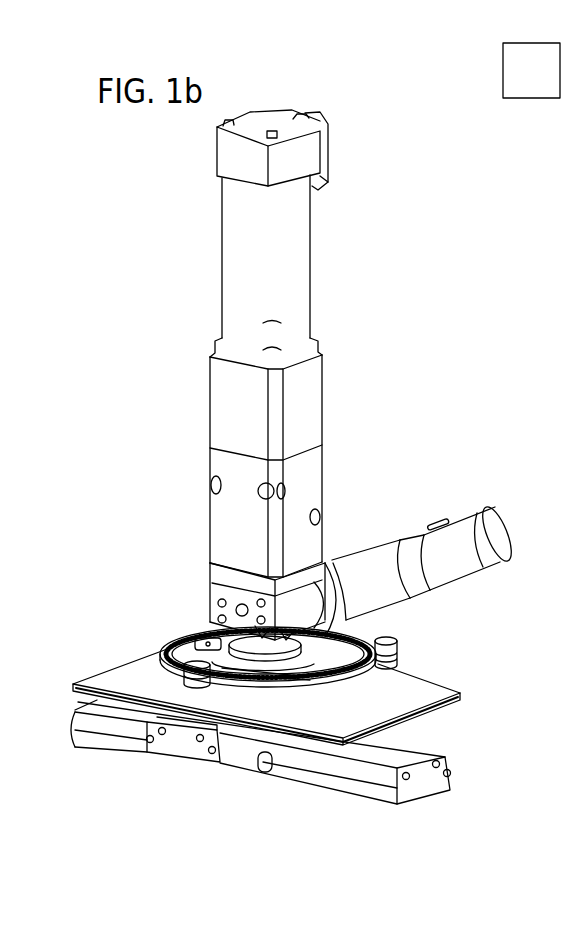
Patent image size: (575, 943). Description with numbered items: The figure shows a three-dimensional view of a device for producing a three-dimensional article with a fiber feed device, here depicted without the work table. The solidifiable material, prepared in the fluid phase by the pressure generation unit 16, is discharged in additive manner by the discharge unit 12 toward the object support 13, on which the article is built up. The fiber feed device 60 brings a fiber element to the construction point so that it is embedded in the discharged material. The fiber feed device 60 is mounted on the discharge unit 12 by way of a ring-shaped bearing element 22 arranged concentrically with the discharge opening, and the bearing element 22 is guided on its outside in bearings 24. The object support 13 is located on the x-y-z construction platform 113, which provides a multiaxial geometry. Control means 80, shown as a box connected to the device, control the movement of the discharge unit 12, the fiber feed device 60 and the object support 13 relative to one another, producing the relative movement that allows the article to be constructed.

The discharge unit 12 is at (212, 565).
The pressure generation unit 16 is at (375, 567).
The fiber feed device 60 is at (163, 628).
The bearing element 22 is at (272, 683).
The bearings 24 is at (400, 652).
The object support 13 is at (197, 720).
The x-y-z construction platform 113 is at (330, 783).
The control means 80 is at (574, 793).